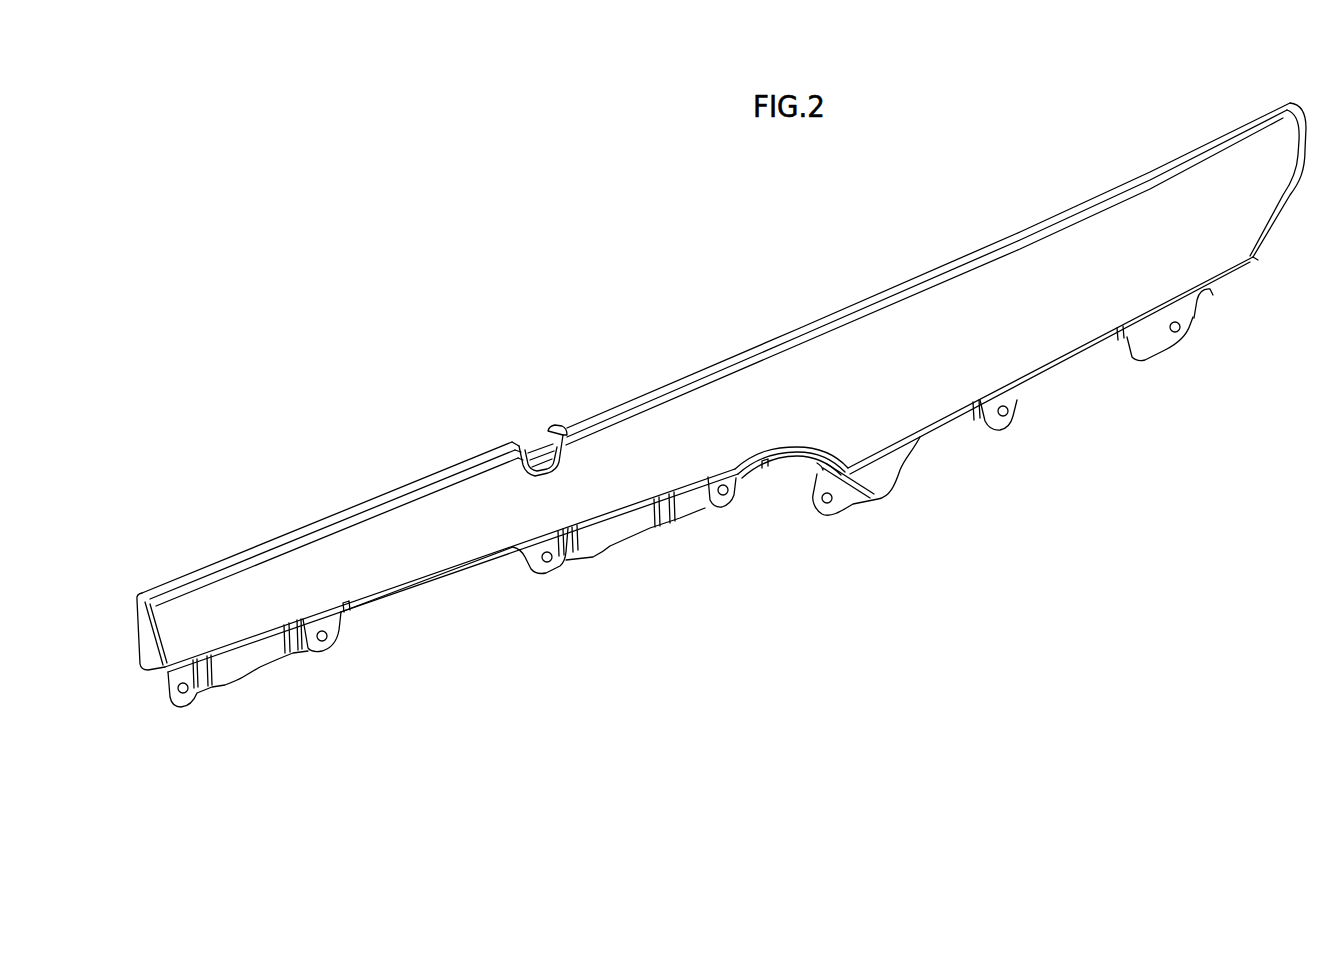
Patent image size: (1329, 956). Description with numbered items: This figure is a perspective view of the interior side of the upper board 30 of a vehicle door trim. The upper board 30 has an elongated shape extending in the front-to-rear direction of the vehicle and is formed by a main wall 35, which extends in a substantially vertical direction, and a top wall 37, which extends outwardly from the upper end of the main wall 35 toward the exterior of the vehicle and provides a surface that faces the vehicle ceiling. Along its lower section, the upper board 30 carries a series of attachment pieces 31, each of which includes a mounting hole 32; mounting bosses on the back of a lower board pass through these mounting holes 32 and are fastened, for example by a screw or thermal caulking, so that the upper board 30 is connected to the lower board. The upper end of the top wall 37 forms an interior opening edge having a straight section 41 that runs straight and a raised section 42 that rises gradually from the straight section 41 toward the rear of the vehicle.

The upper board 30 is at (721, 413).
The attachment pieces 31 is at (178, 697).
The mounting hole 32 is at (184, 692).
The main wall 35 is at (730, 427).
The top wall 37 is at (607, 410).
The straight section 41 is at (293, 528).
The raised section 42 is at (1233, 127).